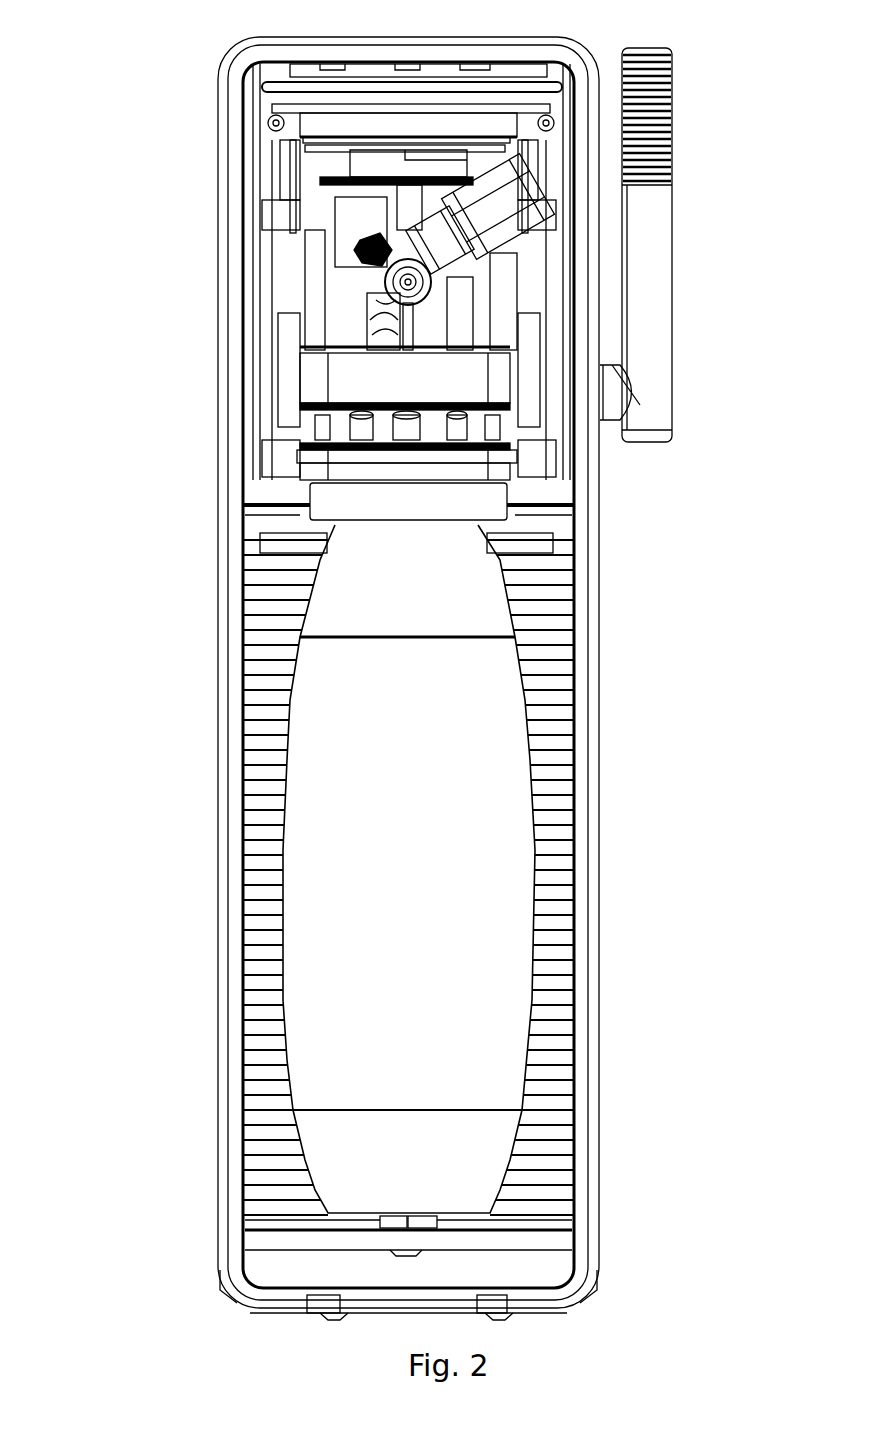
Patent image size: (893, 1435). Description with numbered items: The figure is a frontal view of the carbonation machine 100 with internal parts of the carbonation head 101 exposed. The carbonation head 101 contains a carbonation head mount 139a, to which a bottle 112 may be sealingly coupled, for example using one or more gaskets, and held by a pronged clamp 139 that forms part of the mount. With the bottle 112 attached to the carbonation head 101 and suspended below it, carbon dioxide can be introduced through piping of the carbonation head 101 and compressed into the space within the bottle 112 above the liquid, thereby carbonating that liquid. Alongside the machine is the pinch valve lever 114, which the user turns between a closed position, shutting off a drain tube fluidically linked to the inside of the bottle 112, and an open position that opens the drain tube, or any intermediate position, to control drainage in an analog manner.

The carbonation machine 100 is at (182, 110).
The carbonation head 101 is at (342, 309).
The bottle 112 is at (290, 767).
The pinch valve lever 114 is at (677, 283).
The pronged clamp 139 is at (330, 420).
The carbonation head mount 139a is at (473, 497).